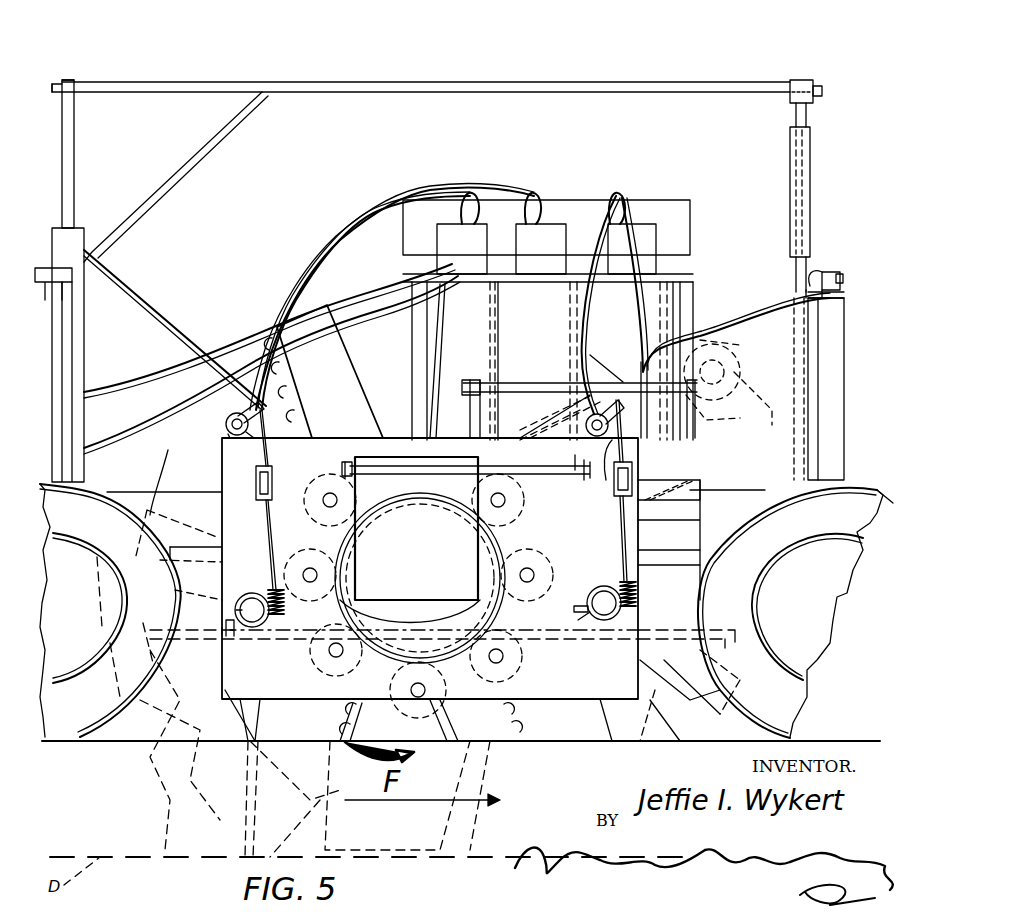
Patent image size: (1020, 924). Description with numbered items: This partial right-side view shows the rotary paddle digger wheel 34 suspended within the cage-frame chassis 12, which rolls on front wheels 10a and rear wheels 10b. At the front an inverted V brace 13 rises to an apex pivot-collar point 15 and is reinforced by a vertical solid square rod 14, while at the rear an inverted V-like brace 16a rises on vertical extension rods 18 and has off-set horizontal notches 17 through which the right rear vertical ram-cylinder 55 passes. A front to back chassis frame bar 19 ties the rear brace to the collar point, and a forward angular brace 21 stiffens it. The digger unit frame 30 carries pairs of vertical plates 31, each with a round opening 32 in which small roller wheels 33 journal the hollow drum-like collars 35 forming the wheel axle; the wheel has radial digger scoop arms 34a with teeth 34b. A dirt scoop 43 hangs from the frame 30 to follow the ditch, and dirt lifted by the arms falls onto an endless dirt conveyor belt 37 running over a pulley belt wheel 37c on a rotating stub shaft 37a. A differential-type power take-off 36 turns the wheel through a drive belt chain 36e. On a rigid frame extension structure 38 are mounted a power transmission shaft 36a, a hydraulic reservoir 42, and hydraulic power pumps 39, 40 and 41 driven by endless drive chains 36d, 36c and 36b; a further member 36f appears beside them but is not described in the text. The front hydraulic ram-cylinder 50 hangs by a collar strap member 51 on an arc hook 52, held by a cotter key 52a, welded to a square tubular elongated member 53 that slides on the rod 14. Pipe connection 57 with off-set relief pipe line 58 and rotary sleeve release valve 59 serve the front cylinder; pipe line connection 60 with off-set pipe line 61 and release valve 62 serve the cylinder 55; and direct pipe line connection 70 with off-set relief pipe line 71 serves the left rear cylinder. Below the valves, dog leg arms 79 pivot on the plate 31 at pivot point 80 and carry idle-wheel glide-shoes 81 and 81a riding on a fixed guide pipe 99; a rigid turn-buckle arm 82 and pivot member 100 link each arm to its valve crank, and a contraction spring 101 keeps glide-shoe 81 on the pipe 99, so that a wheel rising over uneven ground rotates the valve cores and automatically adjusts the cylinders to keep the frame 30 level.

The front wheels 10a is at (772, 704).
The rear wheels 10b is at (88, 722).
The cage-frame chassis 12 is at (640, 70).
The inverted V brace 13 is at (808, 126).
The vertical solid square rod 14 is at (812, 186).
The apex pivot-collar point 15 is at (808, 82).
The inverted V-like brace 16a is at (66, 127).
The off-set horizontal notches 17 is at (48, 286).
The vertical extension rods 18 is at (70, 392).
The front to back chassis frame bar 19 is at (386, 84).
The forward angular brace 21 is at (172, 190).
The digger unit frame 30 is at (160, 516).
The vertical plates 31 is at (236, 690).
The round opening 32 is at (486, 562).
The roller wheels 33 is at (312, 498).
The paddle digger wheel 34 is at (298, 288).
The radial digger scoop arms 34a is at (168, 450).
The teeth 34b is at (660, 658).
The hollow drum-like collars 35 is at (360, 622).
The differential-type power take-off 36 is at (742, 332).
The power transmission shaft 36a is at (512, 384).
The endless drive chain 36b is at (672, 304).
The endless drive chain 36c is at (566, 320).
The endless drive chain 36d is at (490, 343).
The drive belt chain 36e is at (710, 458).
The frame brace 36f is at (560, 406).
The endless dirt conveyor belt 37 is at (503, 518).
The rotating stub shaft 37a is at (506, 472).
The pulley belt wheel 37c is at (340, 468).
The rigid frame extension structure 38 is at (412, 298).
The hydraulic power pump 39 is at (482, 232).
The hydraulic power pump 40 is at (540, 234).
The hydraulic power pump 41 is at (634, 230).
The hydraulic reservoir 42 is at (700, 212).
The dirt scoop 43 is at (96, 628).
The front hydraulic ram-cylinder 50 is at (846, 342).
The collar strap member 51 is at (840, 296).
The arc hook 52 is at (822, 272).
The cotter key 52a is at (842, 277).
The square tubular elongated member 53 is at (814, 384).
The right rear vertical ram-cylinder 55 is at (84, 335).
The pipe connection 57 is at (614, 188).
The off-set relief pipe line 58 is at (590, 352).
The rotary sleeve release valve 59 is at (606, 474).
The pipe line connection 60 is at (536, 188).
The off-set pipe line 61 is at (347, 244).
The rotary sleeve release valve 62 is at (241, 450).
The direct pipe line connection 70 is at (473, 190).
The off-set relief pipe line 71 is at (152, 428).
The dog leg arms 79 is at (264, 598).
The pivot point 80 is at (226, 638).
The idle-wheel glide-shoe 81 is at (248, 620).
The idle-wheel glide-shoe 81a is at (632, 604).
The rigid turn-buckle arm 82 is at (262, 526).
The fixed guide pipe 99 is at (722, 645).
The pivot member 100 is at (260, 488).
The contraction spring 101 is at (280, 602).